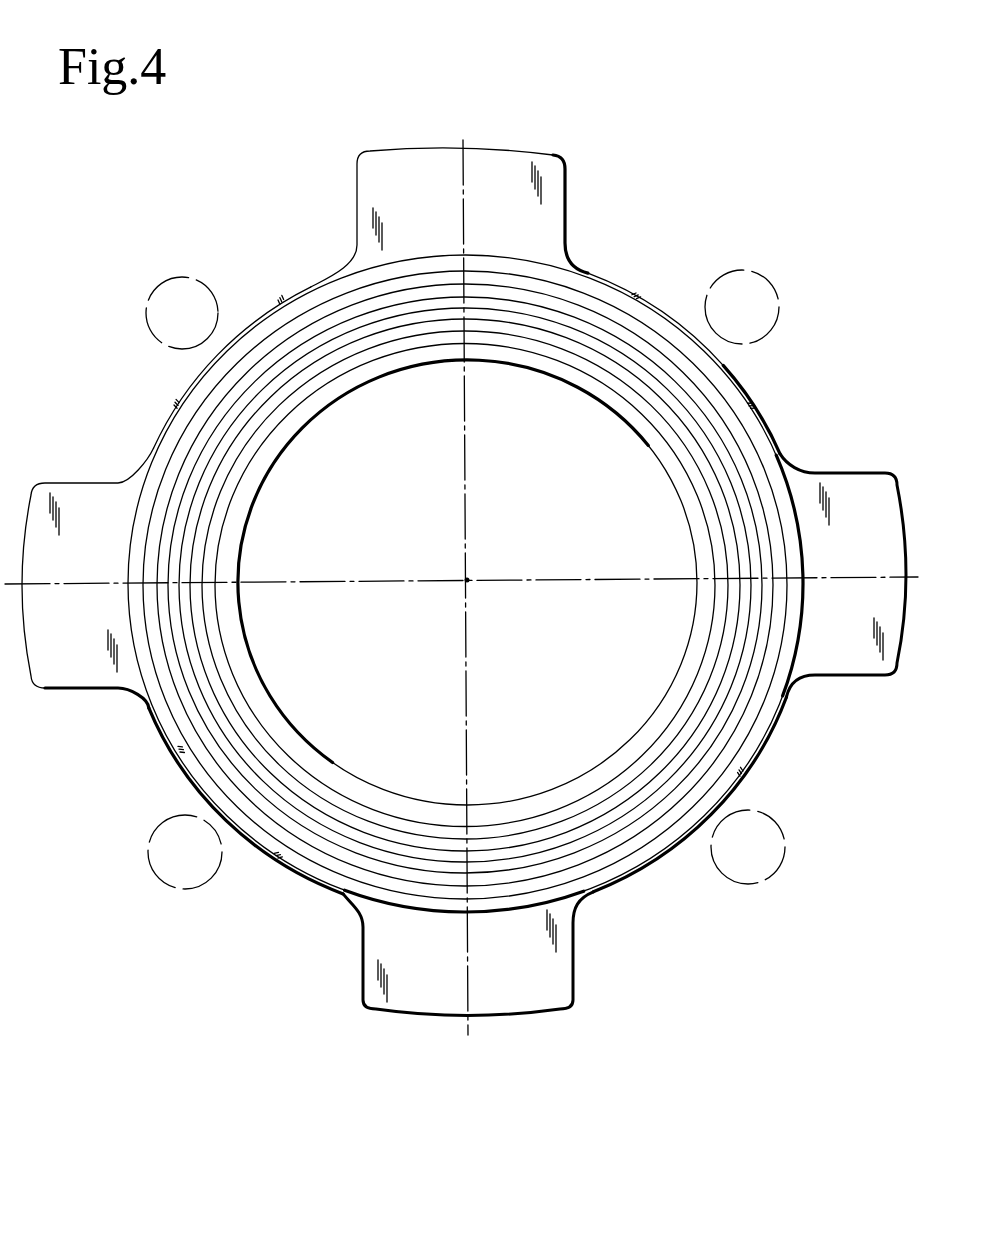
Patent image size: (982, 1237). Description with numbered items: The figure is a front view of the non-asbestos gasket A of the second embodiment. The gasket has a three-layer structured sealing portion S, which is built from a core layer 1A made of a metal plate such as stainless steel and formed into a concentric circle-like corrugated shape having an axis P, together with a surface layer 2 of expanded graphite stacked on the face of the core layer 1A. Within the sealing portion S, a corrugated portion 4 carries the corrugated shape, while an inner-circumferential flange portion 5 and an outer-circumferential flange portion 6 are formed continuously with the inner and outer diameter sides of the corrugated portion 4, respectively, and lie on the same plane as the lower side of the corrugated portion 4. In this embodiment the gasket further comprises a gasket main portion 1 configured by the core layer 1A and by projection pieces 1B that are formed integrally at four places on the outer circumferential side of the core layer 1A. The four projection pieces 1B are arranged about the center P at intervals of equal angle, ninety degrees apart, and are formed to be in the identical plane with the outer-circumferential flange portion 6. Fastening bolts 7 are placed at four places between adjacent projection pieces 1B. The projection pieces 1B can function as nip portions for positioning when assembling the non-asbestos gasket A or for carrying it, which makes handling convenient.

The gasket main portion 1 is at (464, 564).
The core layer 1A is at (758, 760).
The projection pieces 1B is at (825, 668).
The surface layer 2 is at (754, 394).
The corrugated portion 4 is at (317, 810).
The inner-circumferential flange portion 5 is at (625, 747).
The outer-circumferential flange portion 6 is at (293, 868).
The fastening bolts 7 is at (196, 283).
The non-asbestos gasket A is at (567, 217).
The sealing portion S is at (188, 448).
The axis (center) P is at (467, 580).